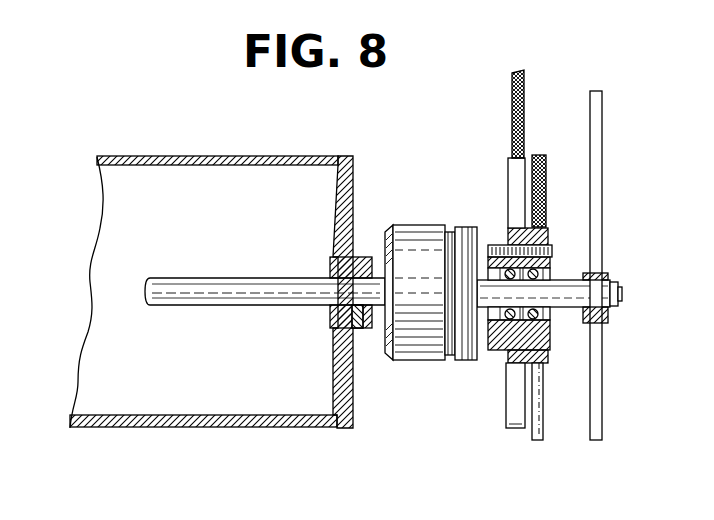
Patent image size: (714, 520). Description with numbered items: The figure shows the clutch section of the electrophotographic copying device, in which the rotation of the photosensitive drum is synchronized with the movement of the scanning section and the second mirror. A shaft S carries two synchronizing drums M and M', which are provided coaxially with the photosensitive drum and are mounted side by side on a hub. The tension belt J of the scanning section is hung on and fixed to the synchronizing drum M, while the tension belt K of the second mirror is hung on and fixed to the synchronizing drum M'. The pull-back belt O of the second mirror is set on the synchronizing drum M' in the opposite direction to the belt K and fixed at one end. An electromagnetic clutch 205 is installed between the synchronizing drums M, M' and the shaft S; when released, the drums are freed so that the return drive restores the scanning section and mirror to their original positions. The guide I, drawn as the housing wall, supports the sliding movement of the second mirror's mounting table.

The guide I is at (265, 157).
The shaft S is at (240, 283).
The electromagnetic clutch 205 is at (420, 235).
The synchronizing drum M is at (491, 288).
The synchronizing drum M' is at (536, 295).
The tension belt J is at (512, 100).
The tension belt K is at (540, 155).
The pull-back belt O is at (538, 408).